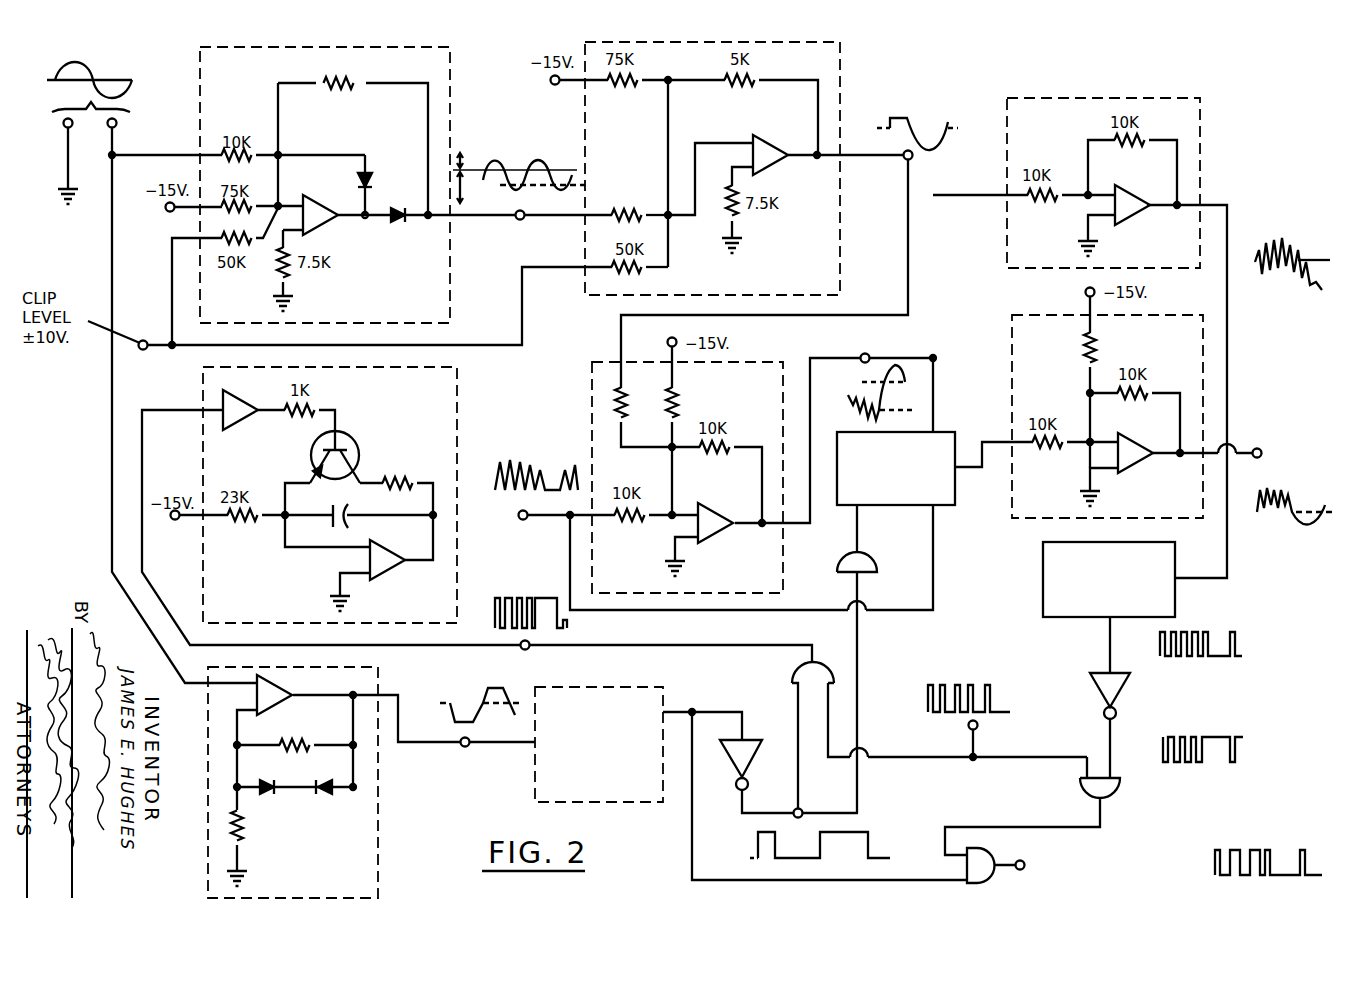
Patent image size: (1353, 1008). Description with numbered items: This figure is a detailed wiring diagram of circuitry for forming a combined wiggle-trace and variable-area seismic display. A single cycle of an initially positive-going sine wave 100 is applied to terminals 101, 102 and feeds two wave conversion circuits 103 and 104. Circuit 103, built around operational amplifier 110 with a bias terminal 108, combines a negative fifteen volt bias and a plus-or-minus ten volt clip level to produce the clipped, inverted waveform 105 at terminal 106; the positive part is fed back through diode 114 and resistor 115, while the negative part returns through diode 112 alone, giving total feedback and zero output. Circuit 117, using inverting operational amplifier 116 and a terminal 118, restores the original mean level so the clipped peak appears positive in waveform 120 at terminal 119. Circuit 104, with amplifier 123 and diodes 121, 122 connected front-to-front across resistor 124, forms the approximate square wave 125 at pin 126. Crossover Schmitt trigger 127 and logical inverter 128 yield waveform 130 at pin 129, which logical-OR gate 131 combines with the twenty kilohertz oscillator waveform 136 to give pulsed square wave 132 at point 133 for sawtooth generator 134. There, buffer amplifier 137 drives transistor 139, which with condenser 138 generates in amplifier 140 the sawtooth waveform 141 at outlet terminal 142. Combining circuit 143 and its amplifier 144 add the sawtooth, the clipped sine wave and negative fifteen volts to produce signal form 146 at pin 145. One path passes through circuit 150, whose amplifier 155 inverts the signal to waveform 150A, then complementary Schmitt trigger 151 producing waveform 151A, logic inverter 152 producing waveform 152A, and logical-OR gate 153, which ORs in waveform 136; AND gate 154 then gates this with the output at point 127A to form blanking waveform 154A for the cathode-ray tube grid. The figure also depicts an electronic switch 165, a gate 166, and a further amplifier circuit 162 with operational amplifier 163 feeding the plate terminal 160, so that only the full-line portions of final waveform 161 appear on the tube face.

The sine wave 100 is at (88, 68).
The terminal 101 is at (117, 124).
The terminal 102 is at (63, 123).
The wave conversion circuit 103 is at (325, 185).
The square wave generating circuit 104 is at (293, 782).
The waveform 105 is at (530, 160).
The terminal 106 is at (518, 220).
The clip level bias terminal 108 is at (168, 212).
The operational amplifier 110 is at (308, 196).
The diode 112 is at (372, 178).
The diode 114 is at (398, 221).
The resistor 115 is at (346, 89).
The operational amplifier 116 is at (765, 143).
The circuit 117 is at (712, 168).
The bias voltage terminal 118 is at (553, 85).
The terminal 119 is at (913, 157).
The waveform 120 is at (903, 117).
The diode 121 is at (266, 793).
The diode 122 is at (331, 793).
The amplifier 123 is at (281, 690).
The resistor 124 is at (297, 750).
The waveform 125 is at (485, 692).
The pin 126 is at (463, 748).
The crossover Schmitt trigger 127 is at (638, 744).
The point 127A is at (693, 710).
The logical inverter 128 is at (755, 741).
The pin 129 is at (796, 810).
The waveform 130 is at (805, 860).
The logical-OR gate 131 is at (796, 672).
The pulsed square wave 132 is at (546, 600).
The point 133 is at (530, 648).
The sawtooth generator 134 is at (330, 495).
The oscillator input waveform 136 is at (930, 697).
The amplifier 137 is at (238, 423).
The condenser 138 is at (351, 516).
The transistor 139 is at (360, 447).
The amplifier 140 is at (392, 571).
The sawtooth waveform 141 is at (518, 460).
The outlet terminal 142 is at (521, 520).
The combining circuit 143 is at (687, 477).
The amplifier 144 is at (720, 536).
The pin 145 is at (860, 353).
The signal form 146 is at (905, 376).
The circuit 150 is at (1103, 183).
The waveform 150A is at (1287, 236).
The complementary Schmitt trigger 151 is at (1068, 618).
The waveform 151A is at (1232, 630).
The logic inverter 152 is at (1128, 688).
The waveform 152A is at (1228, 732).
The logical-OR gate 153 is at (1122, 787).
The AND gate 154 is at (980, 845).
The waveform 154A is at (1262, 849).
The amplifier 155 is at (1140, 213).
The CRT plate terminal 160 is at (1258, 448).
The final waveform 161 is at (1305, 521).
The amplifier circuit 162 is at (1107, 416).
The operational amplifier 163 is at (1143, 463).
The electronic switch 165 is at (947, 507).
The gate 166 is at (867, 556).